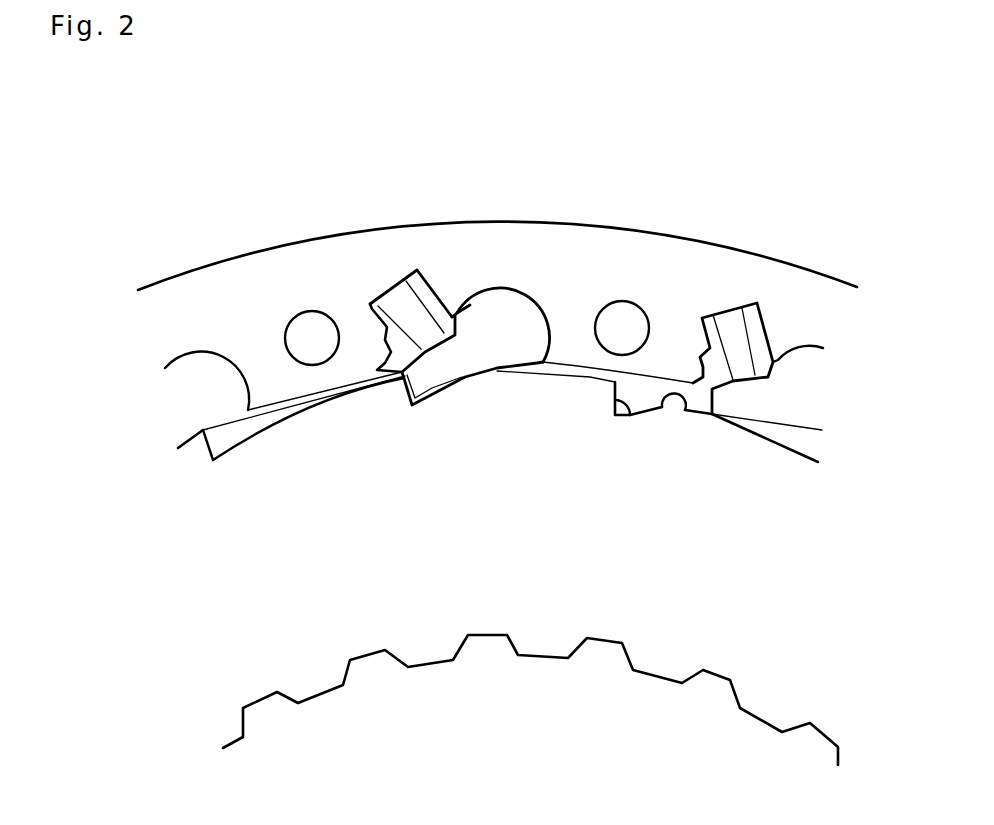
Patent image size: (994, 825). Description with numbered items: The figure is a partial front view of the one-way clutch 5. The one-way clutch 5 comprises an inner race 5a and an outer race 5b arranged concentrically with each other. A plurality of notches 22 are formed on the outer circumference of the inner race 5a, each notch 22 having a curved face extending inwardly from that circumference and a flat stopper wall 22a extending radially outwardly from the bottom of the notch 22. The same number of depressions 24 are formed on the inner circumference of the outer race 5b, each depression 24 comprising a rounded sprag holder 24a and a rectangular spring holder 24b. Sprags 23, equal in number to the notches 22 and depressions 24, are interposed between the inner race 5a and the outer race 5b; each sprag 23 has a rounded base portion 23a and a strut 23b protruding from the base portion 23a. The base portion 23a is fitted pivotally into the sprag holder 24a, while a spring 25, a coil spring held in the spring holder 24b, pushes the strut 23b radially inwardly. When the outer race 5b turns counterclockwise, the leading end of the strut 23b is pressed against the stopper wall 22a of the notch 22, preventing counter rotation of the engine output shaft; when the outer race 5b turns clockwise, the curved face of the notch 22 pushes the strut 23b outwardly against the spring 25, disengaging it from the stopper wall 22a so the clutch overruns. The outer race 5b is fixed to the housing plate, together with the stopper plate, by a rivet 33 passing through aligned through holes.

The one-way clutch 5 is at (516, 456).
The inner race 5a is at (793, 458).
The outer race 5b is at (733, 265).
The notch 22 is at (685, 403).
The stopper wall 22a is at (624, 418).
The sprag 23 is at (477, 396).
The base portion 23a is at (513, 350).
The strut 23b is at (427, 378).
The depression 24 is at (495, 245).
The sprag holder 24a is at (501, 291).
The spring holder 24b is at (456, 242).
The spring 25 is at (406, 300).
The rivet 33 is at (306, 311).